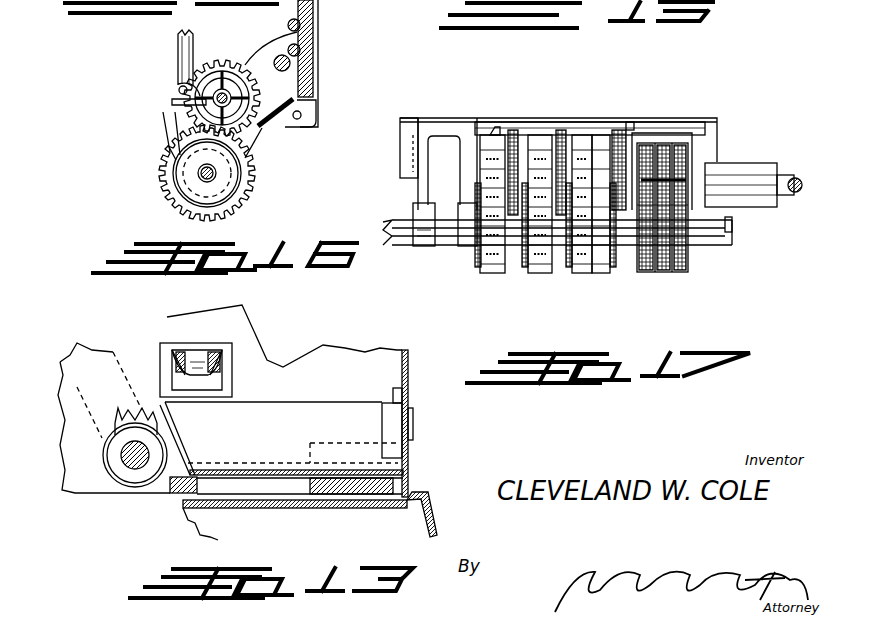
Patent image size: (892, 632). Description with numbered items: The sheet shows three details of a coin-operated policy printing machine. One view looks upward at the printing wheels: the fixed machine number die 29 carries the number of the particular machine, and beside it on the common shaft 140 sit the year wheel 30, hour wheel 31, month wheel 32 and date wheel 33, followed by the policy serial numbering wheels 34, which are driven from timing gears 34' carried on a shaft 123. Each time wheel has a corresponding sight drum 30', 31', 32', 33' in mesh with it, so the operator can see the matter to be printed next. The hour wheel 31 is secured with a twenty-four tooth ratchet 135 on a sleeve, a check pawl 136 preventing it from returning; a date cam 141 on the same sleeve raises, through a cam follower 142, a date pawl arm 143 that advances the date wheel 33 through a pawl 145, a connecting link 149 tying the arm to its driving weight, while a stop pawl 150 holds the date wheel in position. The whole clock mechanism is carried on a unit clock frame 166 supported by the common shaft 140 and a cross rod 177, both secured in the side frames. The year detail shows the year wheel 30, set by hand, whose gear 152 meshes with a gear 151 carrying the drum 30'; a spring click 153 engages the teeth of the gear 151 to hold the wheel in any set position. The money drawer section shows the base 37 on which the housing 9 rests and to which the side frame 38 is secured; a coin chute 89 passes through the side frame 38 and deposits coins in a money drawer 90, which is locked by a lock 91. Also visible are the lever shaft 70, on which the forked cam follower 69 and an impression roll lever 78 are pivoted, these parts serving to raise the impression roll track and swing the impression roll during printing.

In FIG. 13, the housing 9 is at (408, 372).
In FIG. 17, the machine number die 29 is at (445, 243).
In FIG. 16, the year wheel 30 is at (154, 127).
In FIG. 17, the year wheel 30 is at (481, 221).
In FIG. 17, the sight drum 30' is at (467, 112).
In FIG. 17, the hour wheel 31 is at (531, 221).
In FIG. 17, the sight drum 31' is at (573, 99).
In FIG. 17, the month wheel 32 is at (569, 221).
In FIG. 17, the sight drum 32' is at (613, 91).
In FIG. 17, the date wheel 33 is at (591, 224).
In FIG. 17, the sight drum 33' is at (637, 91).
In FIG. 17, the policy serial numbering wheels 34 is at (686, 214).
In FIG. 17, the timing gears 34' is at (701, 155).
In FIG. 13, the base 37 is at (412, 520).
In FIG. 13, the side frame 38 is at (212, 380).
In FIG. 13, the forked cam follower 69 is at (132, 408).
In FIG. 13, the lever shaft 70 is at (135, 462).
In FIG. 13, the impression roll lever 78 is at (80, 353).
In FIG. 13, the coin chute 89 is at (227, 370).
In FIG. 13, the money drawer 90 is at (282, 422).
In FIG. 13, the lock 91 is at (402, 430).
In FIG. 17, the shaft 123 is at (793, 180).
In FIG. 17, the ratchet 135 is at (523, 263).
In FIG. 17, the check pawl 136 is at (537, 147).
In FIG. 16, the common shaft 140 is at (216, 173).
In FIG. 17, the common shaft 140 is at (732, 225).
In FIG. 17, the date cam 141 is at (547, 267).
In FIG. 17, the cam follower 142 is at (582, 147).
In FIG. 17, the date pawl arm 143 is at (620, 140).
In FIG. 16, the pawl 145 is at (167, 127).
In FIG. 16, the connecting link 149 is at (182, 48).
In FIG. 17, the stop pawl 150 is at (627, 127).
In FIG. 16, the gear 151 is at (187, 103).
In FIG. 16, the gear 152 is at (167, 155).
In FIG. 16, the spring click 153 is at (265, 132).
In FIG. 16, the unit clock frame 166 is at (315, 15).
In FIG. 17, the unit clock frame 166 is at (400, 128).
In FIG. 16, the cross rod 177 is at (310, 53).